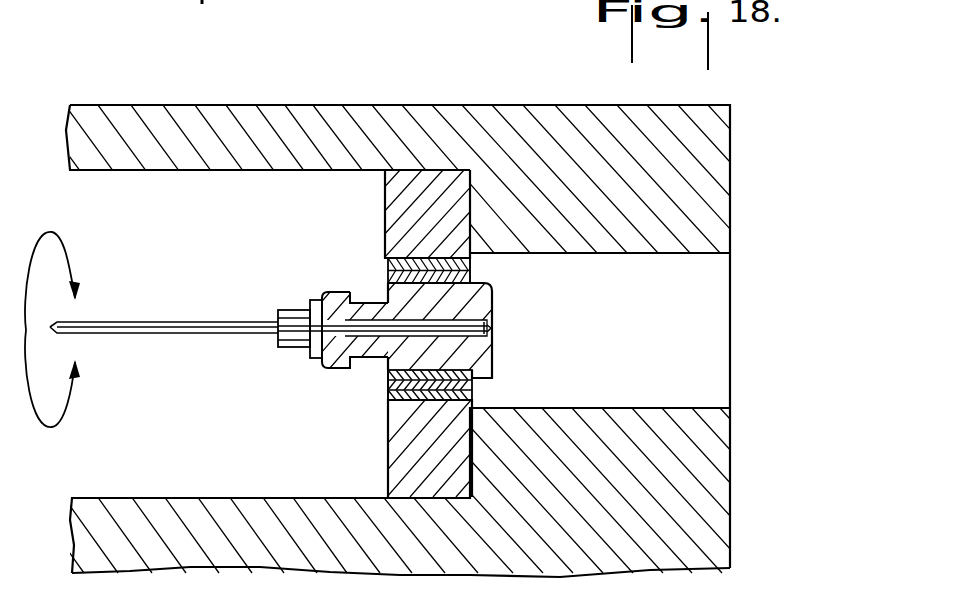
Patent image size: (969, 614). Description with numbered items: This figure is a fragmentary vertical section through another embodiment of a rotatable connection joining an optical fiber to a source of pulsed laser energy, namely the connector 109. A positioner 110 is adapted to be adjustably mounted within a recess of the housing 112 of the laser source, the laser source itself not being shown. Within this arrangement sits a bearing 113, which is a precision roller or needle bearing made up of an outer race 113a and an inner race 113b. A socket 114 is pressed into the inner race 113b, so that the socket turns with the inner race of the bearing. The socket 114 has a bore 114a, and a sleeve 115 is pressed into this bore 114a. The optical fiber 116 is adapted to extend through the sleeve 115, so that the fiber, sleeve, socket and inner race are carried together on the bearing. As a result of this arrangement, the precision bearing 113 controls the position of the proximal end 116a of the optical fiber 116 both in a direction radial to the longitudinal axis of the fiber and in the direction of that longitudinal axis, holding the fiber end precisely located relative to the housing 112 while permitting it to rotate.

The connector 109 is at (364, 272).
The positioner 110 is at (393, 460).
The housing 112 is at (720, 217).
The bearing 113 is at (497, 272).
The outer race 113a is at (473, 390).
The inner race 113b is at (387, 376).
The socket 114 is at (494, 303).
The bore 114a is at (489, 328).
The sleeve 115 is at (343, 366).
The optical fiber 116 is at (157, 322).
The proximal end 116a is at (492, 338).